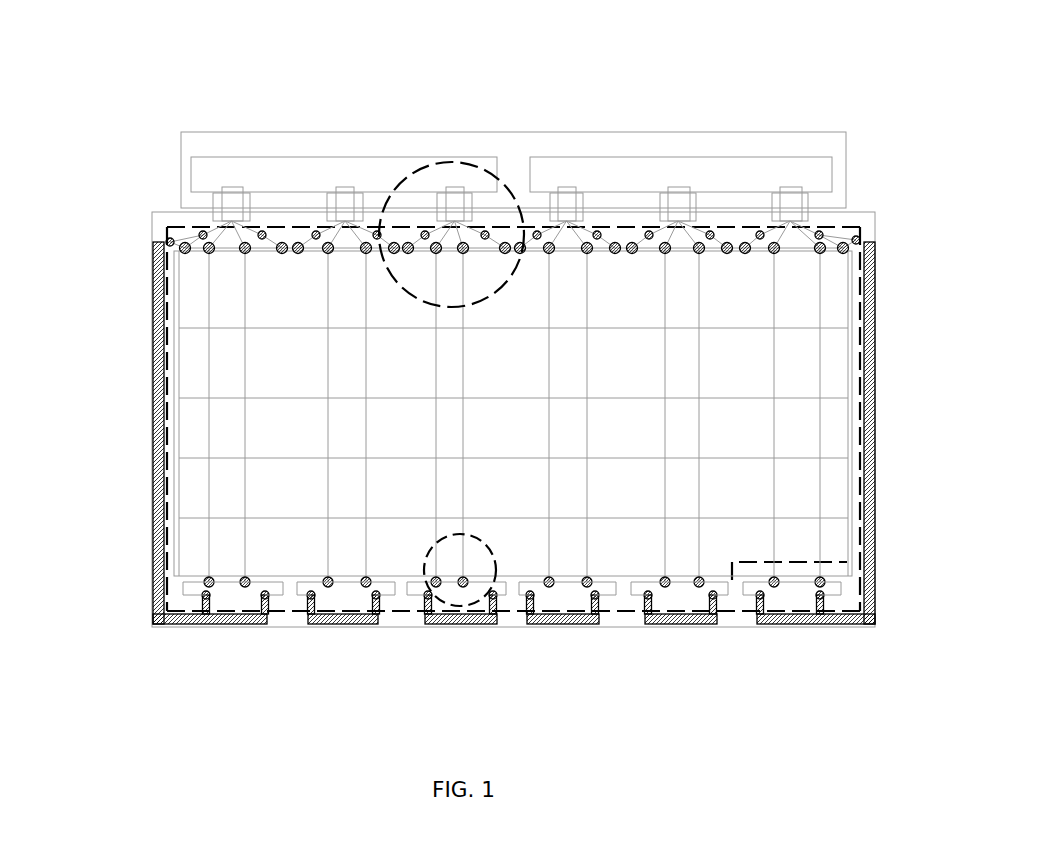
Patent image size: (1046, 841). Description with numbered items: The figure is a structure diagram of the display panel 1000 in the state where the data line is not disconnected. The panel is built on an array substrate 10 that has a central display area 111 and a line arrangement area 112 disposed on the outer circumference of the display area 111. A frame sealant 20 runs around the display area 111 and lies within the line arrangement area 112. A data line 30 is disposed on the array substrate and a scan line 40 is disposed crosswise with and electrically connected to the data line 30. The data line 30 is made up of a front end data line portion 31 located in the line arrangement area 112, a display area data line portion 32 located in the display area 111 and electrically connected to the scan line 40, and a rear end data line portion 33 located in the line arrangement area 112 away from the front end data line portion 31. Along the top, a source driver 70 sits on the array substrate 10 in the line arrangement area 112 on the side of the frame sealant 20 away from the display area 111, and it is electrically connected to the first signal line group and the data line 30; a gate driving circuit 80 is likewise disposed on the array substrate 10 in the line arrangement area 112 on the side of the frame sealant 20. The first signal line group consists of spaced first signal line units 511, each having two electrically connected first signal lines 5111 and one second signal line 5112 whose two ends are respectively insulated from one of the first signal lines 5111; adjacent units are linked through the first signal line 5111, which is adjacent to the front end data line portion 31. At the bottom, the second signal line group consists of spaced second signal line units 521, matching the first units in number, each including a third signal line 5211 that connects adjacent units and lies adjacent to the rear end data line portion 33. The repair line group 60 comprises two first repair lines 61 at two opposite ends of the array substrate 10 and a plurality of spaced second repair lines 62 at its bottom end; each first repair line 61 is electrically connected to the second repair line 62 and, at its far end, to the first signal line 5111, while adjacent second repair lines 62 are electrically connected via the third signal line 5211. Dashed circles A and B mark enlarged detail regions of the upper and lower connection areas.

The display panel 1000 is at (577, 33).
The array substrate 10 is at (865, 220).
The source driver 70 is at (808, 140).
The line arrangement area 112 is at (873, 521).
The display area 111 is at (812, 430).
The repair line group 60 is at (556, 623).
The first repair line 61 is at (872, 599).
The second repair line 62 is at (837, 618).
The frame sealant 20 is at (859, 564).
The data line 30 is at (502, 409).
The front end data line portion 31 is at (170, 242).
The display area data line portion 32 is at (209, 323).
The rear end data line portion 33 is at (468, 584).
The scan line 40 is at (840, 332).
The gate driving circuit 80 is at (855, 300).
The first signal line unit 511 is at (446, 172).
The first signal line 5111 is at (212, 222).
The second signal line 5112 is at (233, 247).
The second signal line unit 521 is at (512, 628).
The third signal line 5211 is at (753, 582).
The detail region A is at (422, 163).
The detail region B is at (498, 598).